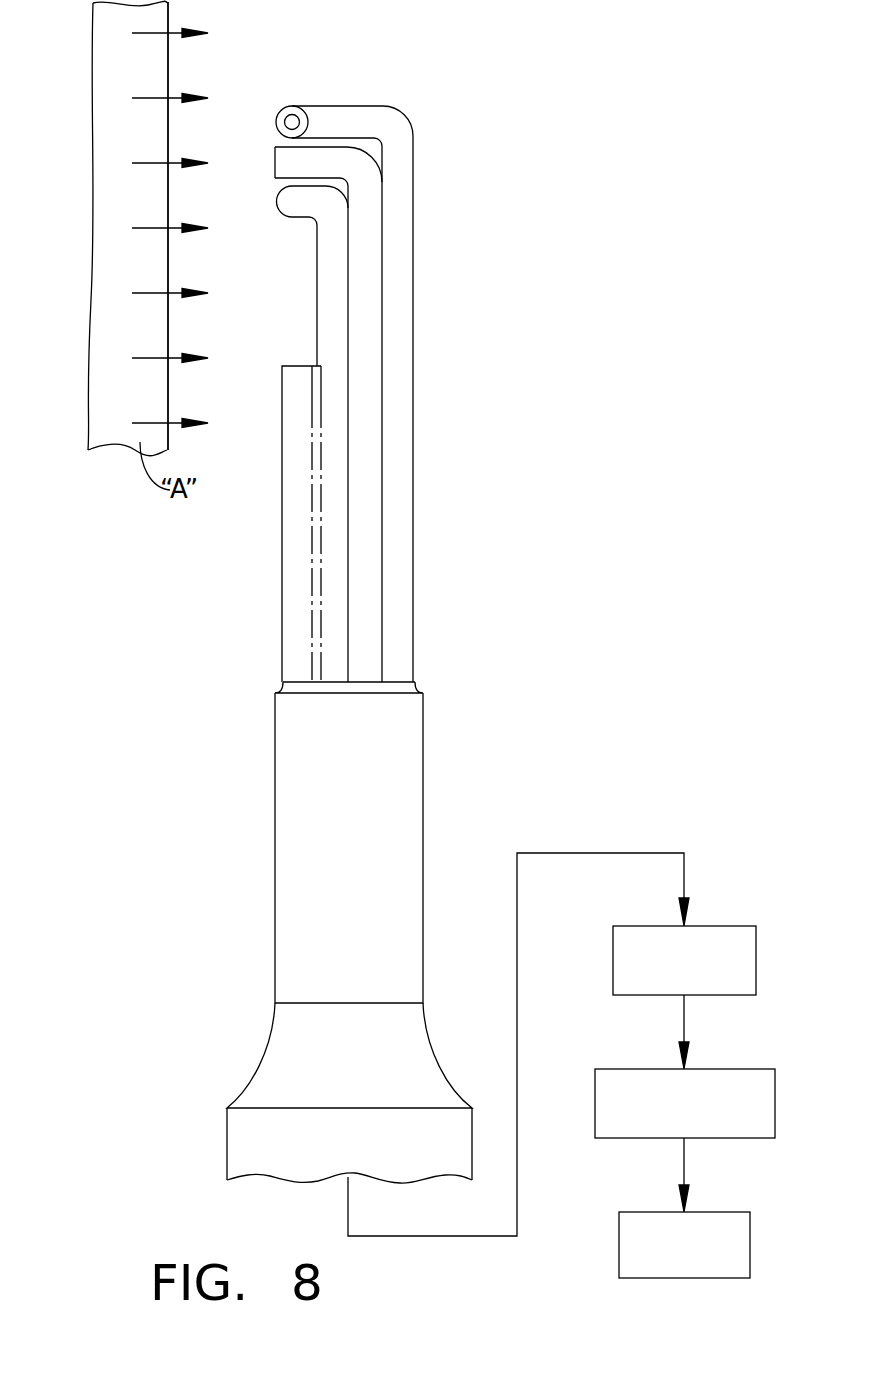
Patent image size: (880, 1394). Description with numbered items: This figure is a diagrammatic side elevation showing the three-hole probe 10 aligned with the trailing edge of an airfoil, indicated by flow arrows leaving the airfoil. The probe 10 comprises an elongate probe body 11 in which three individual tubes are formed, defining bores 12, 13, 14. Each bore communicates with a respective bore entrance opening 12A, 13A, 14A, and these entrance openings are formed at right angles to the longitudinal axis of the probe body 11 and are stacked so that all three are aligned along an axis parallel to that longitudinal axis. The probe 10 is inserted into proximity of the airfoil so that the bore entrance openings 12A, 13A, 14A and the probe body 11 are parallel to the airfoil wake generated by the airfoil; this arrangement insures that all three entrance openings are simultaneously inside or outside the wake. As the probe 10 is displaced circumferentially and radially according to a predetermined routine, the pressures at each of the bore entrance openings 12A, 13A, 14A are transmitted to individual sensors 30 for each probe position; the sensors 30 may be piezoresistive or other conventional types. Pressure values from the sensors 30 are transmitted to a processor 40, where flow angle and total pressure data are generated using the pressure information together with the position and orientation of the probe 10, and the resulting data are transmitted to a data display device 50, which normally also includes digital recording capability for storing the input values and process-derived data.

The 3-hole probe 10 is at (455, 320).
The probe body 11 is at (413, 577).
The bore 12 is at (395, 128).
The bore entrance opening 12A is at (277, 116).
The bore 13 is at (372, 183).
The bore entrance opening 13A is at (275, 162).
The bore 14 is at (332, 257).
The bore entrance opening 14A is at (277, 205).
The sensors 30 is at (640, 926).
The processor 40 is at (620, 1069).
The data display device 50 is at (645, 1212).